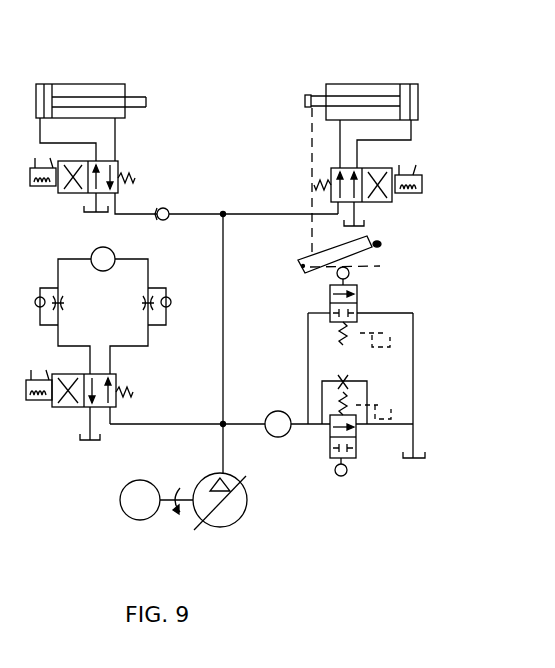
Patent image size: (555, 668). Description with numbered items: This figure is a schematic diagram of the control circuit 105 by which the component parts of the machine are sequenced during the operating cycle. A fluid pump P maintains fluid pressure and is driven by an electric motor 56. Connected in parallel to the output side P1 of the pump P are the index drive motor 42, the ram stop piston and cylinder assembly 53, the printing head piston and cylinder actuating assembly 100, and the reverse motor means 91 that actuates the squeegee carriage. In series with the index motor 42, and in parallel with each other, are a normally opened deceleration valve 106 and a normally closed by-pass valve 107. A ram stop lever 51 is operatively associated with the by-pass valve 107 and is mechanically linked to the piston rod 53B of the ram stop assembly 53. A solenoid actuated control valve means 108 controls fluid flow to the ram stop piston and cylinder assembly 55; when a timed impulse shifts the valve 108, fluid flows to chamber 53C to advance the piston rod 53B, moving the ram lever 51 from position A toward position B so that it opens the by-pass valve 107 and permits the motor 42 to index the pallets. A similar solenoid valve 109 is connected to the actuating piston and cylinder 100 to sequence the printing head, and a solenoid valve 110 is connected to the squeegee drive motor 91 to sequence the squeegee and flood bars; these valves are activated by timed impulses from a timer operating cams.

The printing head piston and cylinder actuating assembly 100 is at (66, 84).
The control circuit 105 is at (119, 55).
The solenoid actuated valve 109 is at (78, 197).
The reverse motor means 91 is at (99, 270).
The solenoid valve 110 is at (74, 410).
The index drive motor 42 is at (272, 411).
The output side of the pump P1 is at (222, 447).
The fluid pump P is at (249, 500).
The electric motor 56 is at (120, 499).
The ram stop piston and cylinder assembly 53 is at (420, 98).
The piston rod 53B is at (310, 92).
The chamber 53C is at (415, 108).
The solenoid actuated control valve means 108 is at (380, 169).
The ram stop lever 51 is at (384, 248).
The ram stop piston and cylinder assembly 55 is at (378, 240).
The position A is at (386, 252).
The position B is at (380, 266).
The normally closed by-pass valve 107 is at (330, 300).
The normally opened deceleration valve 106 is at (330, 441).